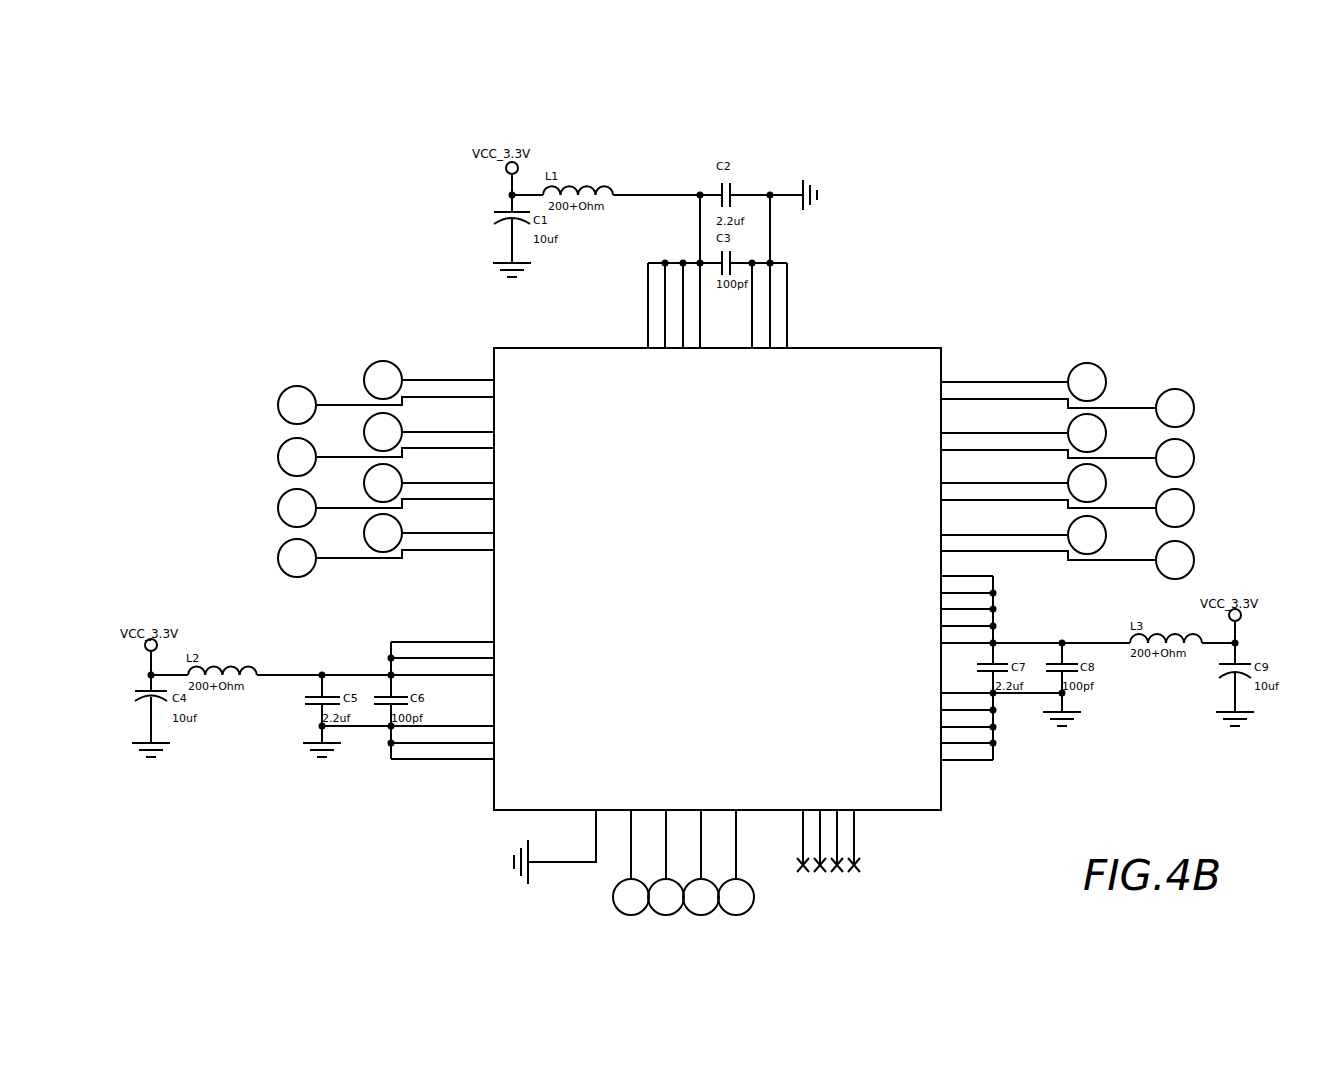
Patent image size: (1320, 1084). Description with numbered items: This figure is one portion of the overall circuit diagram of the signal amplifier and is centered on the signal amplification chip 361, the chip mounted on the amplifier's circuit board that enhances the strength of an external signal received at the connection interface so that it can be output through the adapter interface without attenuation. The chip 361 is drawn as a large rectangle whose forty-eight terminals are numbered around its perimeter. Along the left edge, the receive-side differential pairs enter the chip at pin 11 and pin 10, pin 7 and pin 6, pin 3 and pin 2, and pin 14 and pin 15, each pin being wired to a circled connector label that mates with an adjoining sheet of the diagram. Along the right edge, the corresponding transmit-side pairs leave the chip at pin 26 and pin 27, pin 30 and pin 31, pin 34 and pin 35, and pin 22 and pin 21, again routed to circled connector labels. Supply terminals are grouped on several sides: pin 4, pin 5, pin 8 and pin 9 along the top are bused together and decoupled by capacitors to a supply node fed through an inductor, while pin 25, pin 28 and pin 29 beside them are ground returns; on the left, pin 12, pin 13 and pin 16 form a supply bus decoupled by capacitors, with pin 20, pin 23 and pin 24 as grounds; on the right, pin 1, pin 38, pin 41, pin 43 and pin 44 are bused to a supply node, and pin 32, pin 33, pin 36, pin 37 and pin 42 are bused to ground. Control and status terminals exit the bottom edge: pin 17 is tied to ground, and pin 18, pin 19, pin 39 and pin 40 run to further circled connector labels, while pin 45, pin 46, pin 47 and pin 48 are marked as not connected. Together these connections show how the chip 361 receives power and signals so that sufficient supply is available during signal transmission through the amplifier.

The signal amplification chip 361 is at (877, 338).
The VCC pin 1 is at (952, 573).
The RX0- pin 2 is at (403, 506).
The RX0+ pin 3 is at (449, 483).
The VCC pin 4 is at (641, 305).
The VCC pin 5 is at (658, 305).
The RX1- pin 6 is at (403, 455).
The RX1+ pin 7 is at (449, 432).
The VCC pin 8 is at (676, 305).
The VCC pin 9 is at (693, 305).
The RX2- pin 10 is at (403, 404).
The RX2+ pin 11 is at (449, 380).
The VCC pin 12 is at (458, 639).
The VCC pin 13 is at (458, 655).
The RXC+ pin 14 is at (449, 533).
The RXC+ pin 15 is at (406, 557).
The VCC pin 16 is at (458, 672).
The EQ_Control pin 17 is at (558, 812).
The CLD_LOS pin 18 is at (631, 834).
The PWRDWN pin 19 is at (666, 832).
The GND pin 20 is at (459, 723).
The TXC- pin 21 is at (1051, 558).
The TXC+ pin 22 is at (1005, 535).
The GND pin 23 is at (459, 739).
The GND pin 24 is at (459, 755).
The GND pin 25 is at (745, 305).
The TX2+ pin 26 is at (1005, 382).
The TX2- pin 27 is at (1051, 406).
The GND pin 28 is at (763, 305).
The GND pin 29 is at (780, 305).
The TX1+ pin 30 is at (1005, 433).
The TX1- pin 31 is at (1051, 457).
The GND pin 32 is at (951, 690).
The GND pin 33 is at (951, 707).
The TX0+ pin 34 is at (1005, 483).
The TX0- pin 35 is at (1051, 507).
The GND pin 36 is at (951, 724).
The GND pin 37 is at (951, 740).
The VCC pin 38 is at (952, 590).
The OUTLEVEL pin 39 is at (701, 829).
The OUTON pin 40 is at (736, 838).
The VCC pin 41 is at (952, 606).
The GND pin 42 is at (951, 757).
The VCC pin 43 is at (952, 623).
The VCC pin 44 is at (952, 640).
The NC pin 45 is at (800, 829).
The NC pin 46 is at (817, 829).
The NC pin 47 is at (834, 829).
The NC pin 48 is at (851, 829).